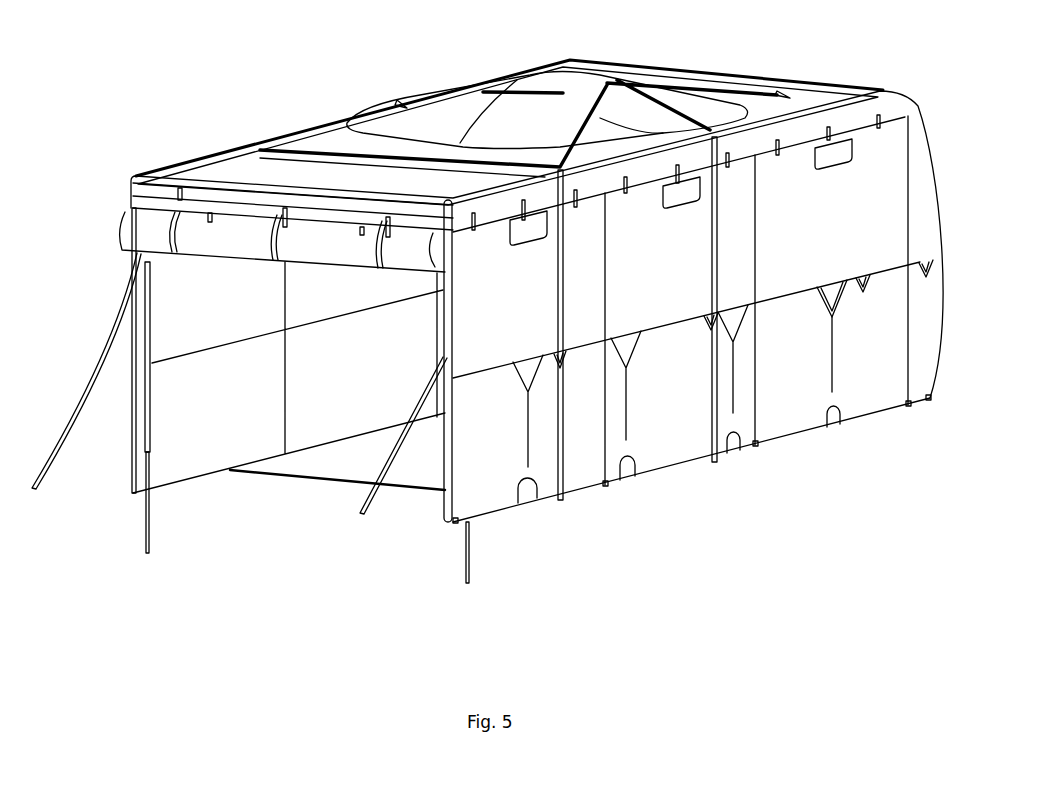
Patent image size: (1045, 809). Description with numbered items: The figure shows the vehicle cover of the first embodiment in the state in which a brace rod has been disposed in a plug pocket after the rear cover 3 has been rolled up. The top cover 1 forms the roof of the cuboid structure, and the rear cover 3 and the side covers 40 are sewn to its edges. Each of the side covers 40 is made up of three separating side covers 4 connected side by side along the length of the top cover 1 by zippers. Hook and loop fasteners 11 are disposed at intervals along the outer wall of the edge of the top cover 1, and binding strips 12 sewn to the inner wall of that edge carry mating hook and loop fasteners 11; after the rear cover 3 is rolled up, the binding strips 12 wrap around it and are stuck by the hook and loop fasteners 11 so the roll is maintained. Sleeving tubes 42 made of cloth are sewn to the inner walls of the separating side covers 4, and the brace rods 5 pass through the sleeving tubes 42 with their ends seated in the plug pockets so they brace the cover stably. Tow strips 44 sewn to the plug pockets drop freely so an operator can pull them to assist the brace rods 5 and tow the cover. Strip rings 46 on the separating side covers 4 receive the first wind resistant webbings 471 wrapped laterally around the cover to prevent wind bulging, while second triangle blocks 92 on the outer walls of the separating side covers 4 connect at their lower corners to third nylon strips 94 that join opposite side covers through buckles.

The top cover 1 is at (331, 125).
The rear cover 3 is at (229, 222).
The hook and loop fasteners 11 is at (172, 188).
The binding strips 12 is at (159, 225).
The separating side covers 4 is at (500, 456).
The side covers 40 is at (716, 501).
The sleeving tubes 42 is at (159, 397).
The tow strips 44 is at (104, 319).
The strip rings 46 is at (876, 308).
The first wind resistant webbings 471 is at (574, 466).
The brace rods 5 is at (161, 535).
The second triangle blocks 92 is at (829, 302).
The third nylon strips 94 is at (838, 361).